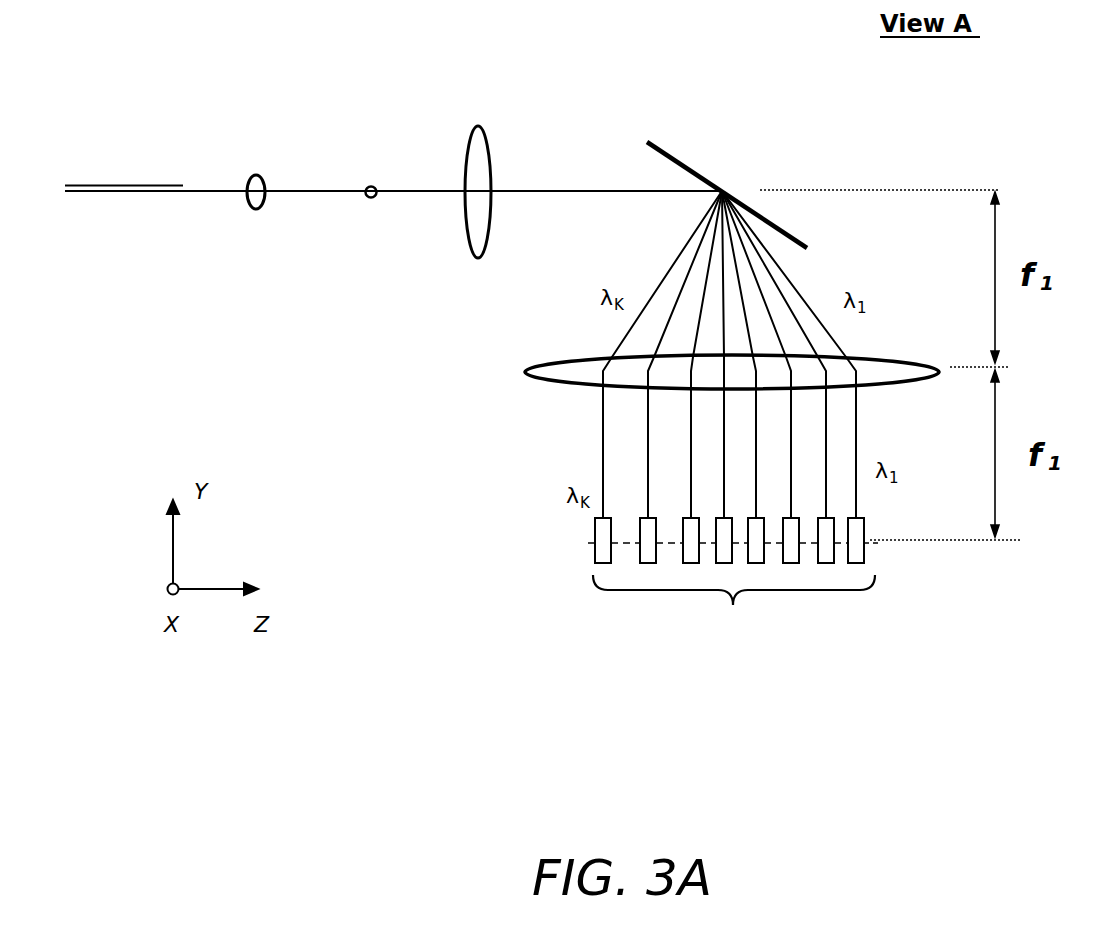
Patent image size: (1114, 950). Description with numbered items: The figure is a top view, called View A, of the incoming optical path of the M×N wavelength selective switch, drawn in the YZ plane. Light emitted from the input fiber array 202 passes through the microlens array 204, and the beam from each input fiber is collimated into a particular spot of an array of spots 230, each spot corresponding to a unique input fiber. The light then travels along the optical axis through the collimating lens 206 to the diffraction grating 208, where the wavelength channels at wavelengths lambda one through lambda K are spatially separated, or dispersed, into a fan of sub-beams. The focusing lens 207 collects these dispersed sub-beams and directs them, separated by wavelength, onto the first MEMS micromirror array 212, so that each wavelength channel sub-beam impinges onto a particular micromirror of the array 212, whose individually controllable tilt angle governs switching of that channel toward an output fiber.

The input fiber array 202 is at (107, 193).
The microlens array 204 is at (256, 175).
The array of spots 230 is at (373, 186).
The collimating lens 206 is at (478, 126).
The diffraction grating 208 is at (669, 153).
The focusing lens 207 is at (537, 384).
The first MEMS micromirror array 212 is at (733, 589).